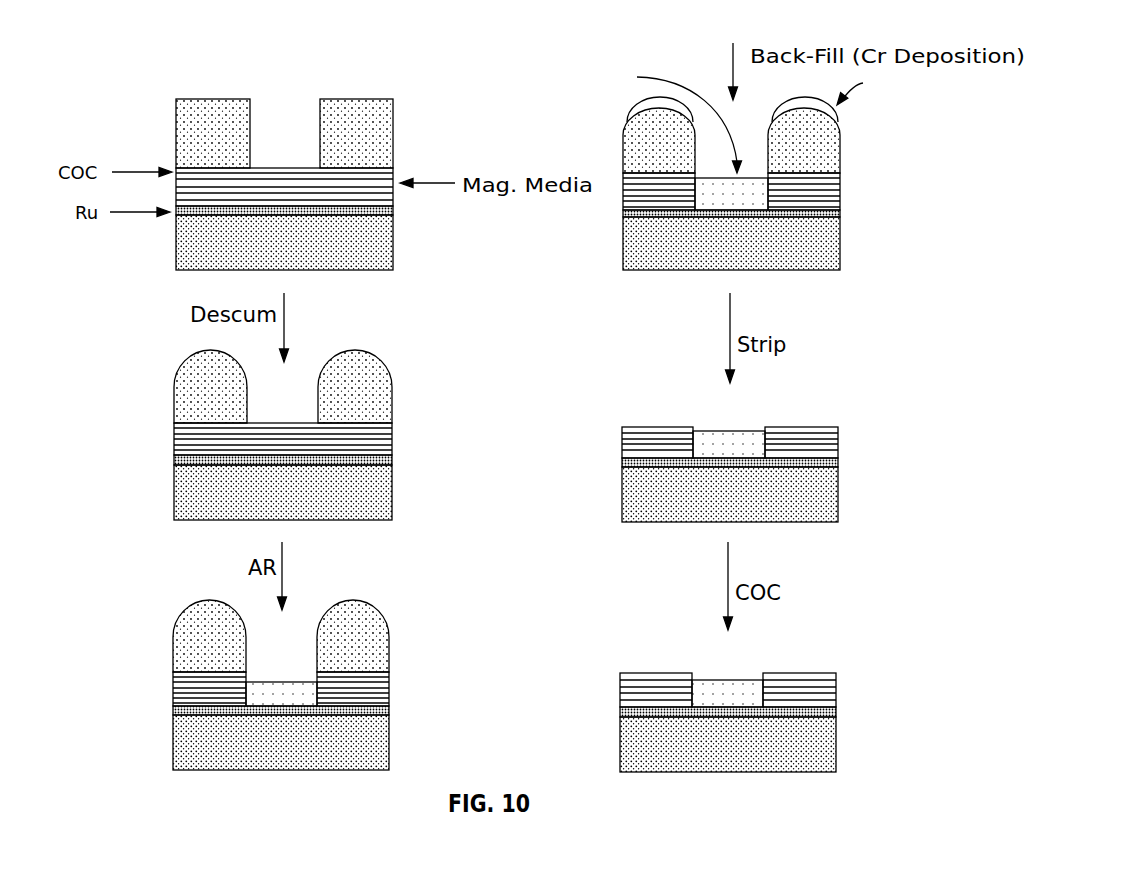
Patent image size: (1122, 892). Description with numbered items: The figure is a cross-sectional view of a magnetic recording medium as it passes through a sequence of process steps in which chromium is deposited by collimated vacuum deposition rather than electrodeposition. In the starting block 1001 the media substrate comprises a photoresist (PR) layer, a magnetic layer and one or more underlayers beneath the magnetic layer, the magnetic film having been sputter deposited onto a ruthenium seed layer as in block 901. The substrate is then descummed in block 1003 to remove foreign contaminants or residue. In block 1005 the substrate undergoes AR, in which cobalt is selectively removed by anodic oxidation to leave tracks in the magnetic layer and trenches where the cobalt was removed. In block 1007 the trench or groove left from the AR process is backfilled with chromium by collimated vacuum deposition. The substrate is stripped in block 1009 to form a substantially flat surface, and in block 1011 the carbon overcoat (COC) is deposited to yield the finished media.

The media substrate block 1001 is at (302, 115).
The descum block 1003 is at (300, 377).
The AR block 1005 is at (298, 633).
The backfill block 1007 is at (1035, 60).
The strip block 1009 is at (793, 345).
The carbon overcoat deposition block 1011 is at (793, 595).
The magnetic film deposition block 901 is at (623, 148).